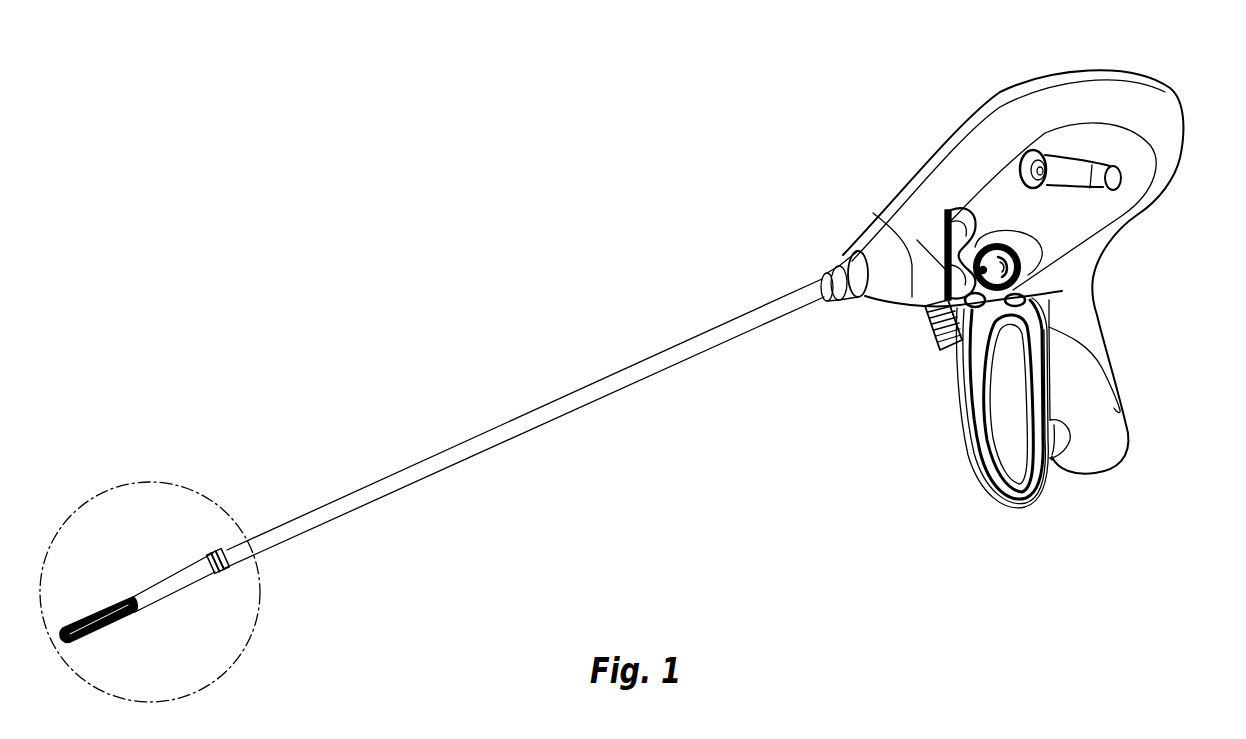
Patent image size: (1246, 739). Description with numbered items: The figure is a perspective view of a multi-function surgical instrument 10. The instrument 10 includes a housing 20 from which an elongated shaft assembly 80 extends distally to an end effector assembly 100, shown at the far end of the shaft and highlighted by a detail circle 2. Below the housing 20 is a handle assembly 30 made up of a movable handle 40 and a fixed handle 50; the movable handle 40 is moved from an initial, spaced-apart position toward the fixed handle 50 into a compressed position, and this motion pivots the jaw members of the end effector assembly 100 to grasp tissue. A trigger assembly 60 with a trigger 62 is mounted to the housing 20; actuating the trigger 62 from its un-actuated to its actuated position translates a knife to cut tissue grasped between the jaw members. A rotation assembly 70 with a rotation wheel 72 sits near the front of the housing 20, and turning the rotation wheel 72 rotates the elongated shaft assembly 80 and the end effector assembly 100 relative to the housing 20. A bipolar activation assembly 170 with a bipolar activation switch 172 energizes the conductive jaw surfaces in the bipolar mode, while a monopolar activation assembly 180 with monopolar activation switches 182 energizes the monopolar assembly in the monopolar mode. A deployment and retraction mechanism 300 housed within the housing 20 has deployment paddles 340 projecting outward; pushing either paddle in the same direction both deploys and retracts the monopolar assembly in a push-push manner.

The instrument 10 is at (544, 264).
The detail area of end effector 2 is at (143, 482).
The end effector assembly 100 is at (60, 619).
The elongated shaft assembly 80 is at (416, 449).
The handle assembly 30 is at (1152, 465).
The housing 20 is at (1163, 123).
The deployment and retraction mechanism 300 is at (1034, 122).
The deployment paddles 340 is at (1123, 182).
The rotation assembly 70 is at (946, 206).
The rotation wheel 72 is at (942, 288).
The monopolar activation assembly 180 is at (1024, 249).
The monopolar activation switches 182 is at (1022, 291).
The trigger 62 is at (922, 328).
The trigger assembly 60 is at (932, 362).
The movable handle 40 is at (967, 433).
The fixed handle 50 is at (1113, 458).
The bipolar activation assembly 170 is at (1078, 438).
The bipolar activation switch 172 is at (1062, 420).